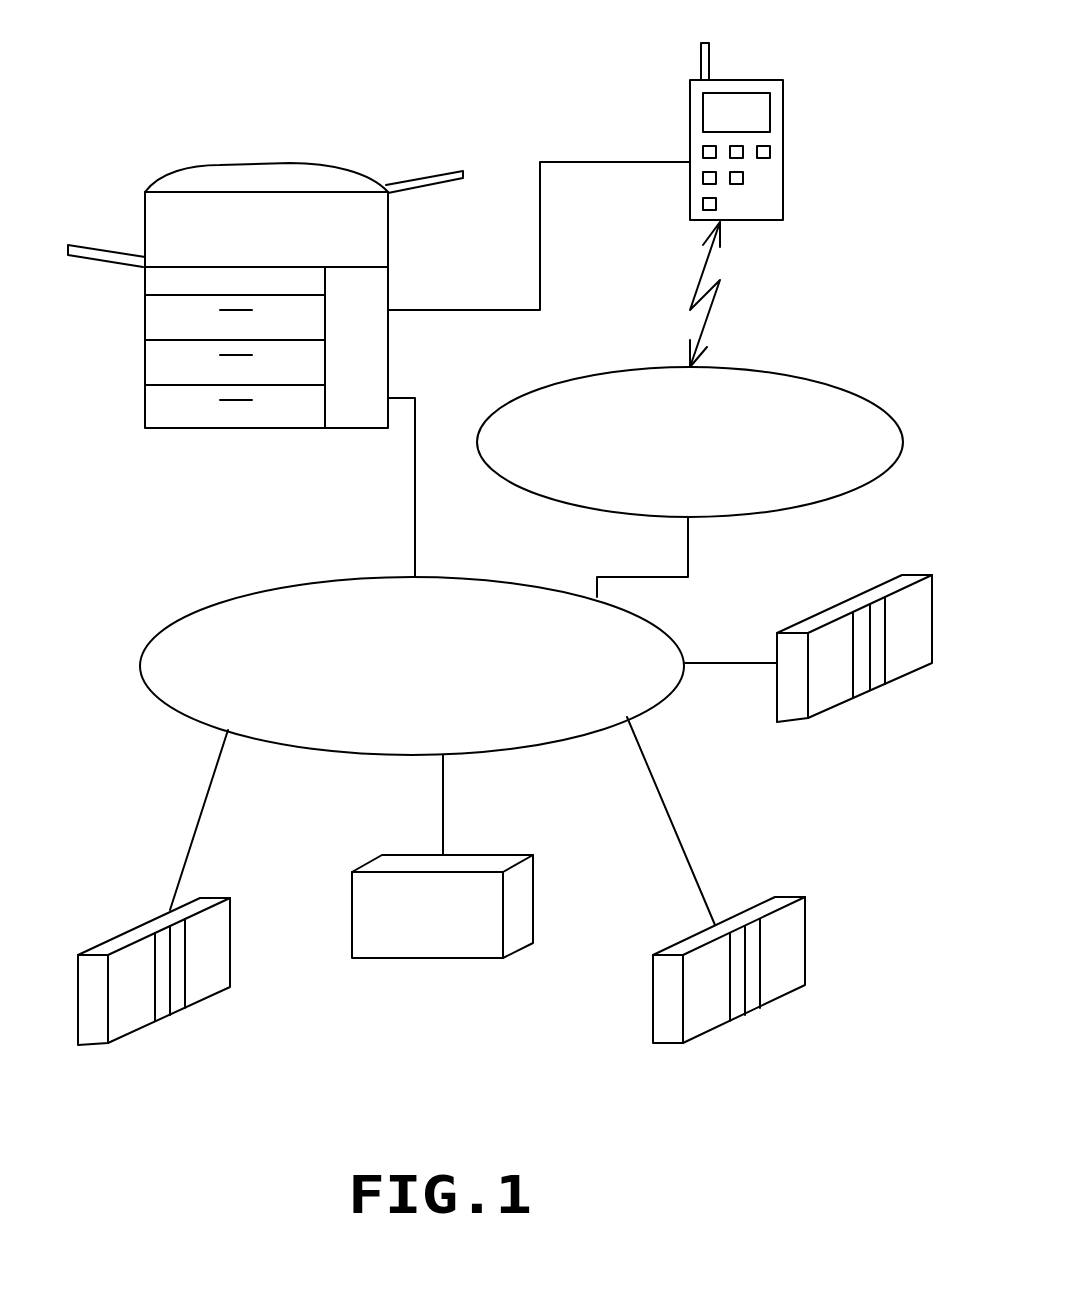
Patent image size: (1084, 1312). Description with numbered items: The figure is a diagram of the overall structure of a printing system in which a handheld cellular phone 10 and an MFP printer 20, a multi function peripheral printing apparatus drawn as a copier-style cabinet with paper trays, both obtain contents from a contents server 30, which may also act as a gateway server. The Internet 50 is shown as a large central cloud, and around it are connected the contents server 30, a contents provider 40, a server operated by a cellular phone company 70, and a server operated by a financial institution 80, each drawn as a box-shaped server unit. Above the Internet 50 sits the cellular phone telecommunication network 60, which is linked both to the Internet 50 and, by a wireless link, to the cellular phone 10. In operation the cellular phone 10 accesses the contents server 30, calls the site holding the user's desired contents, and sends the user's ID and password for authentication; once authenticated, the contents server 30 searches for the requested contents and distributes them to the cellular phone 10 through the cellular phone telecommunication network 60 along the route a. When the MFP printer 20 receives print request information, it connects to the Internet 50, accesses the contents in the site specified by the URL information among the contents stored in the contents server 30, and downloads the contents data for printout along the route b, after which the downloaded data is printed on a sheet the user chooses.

The cellular phone 10 is at (753, 78).
The MFP printer 20 is at (280, 160).
The contents server 30 is at (837, 710).
The contents provider 40 is at (410, 960).
The Internet 50 is at (220, 600).
The cellular phone telecommunication network 60 is at (845, 384).
The server operated by a cellular phone company 70 is at (138, 1033).
The server operated by a financial institution 80 is at (713, 1030).
The route a is at (719, 294).
The route b is at (416, 487).